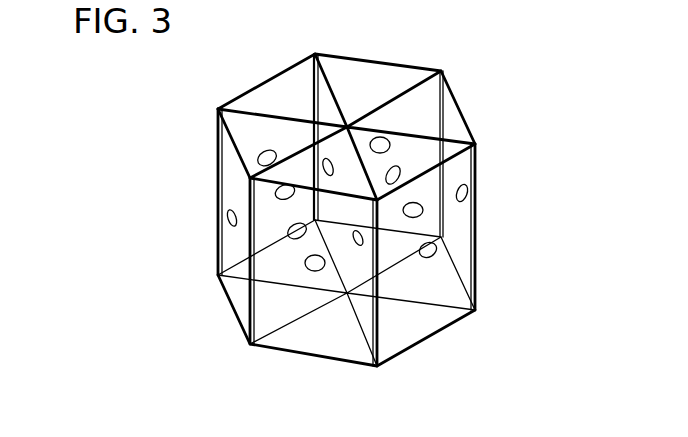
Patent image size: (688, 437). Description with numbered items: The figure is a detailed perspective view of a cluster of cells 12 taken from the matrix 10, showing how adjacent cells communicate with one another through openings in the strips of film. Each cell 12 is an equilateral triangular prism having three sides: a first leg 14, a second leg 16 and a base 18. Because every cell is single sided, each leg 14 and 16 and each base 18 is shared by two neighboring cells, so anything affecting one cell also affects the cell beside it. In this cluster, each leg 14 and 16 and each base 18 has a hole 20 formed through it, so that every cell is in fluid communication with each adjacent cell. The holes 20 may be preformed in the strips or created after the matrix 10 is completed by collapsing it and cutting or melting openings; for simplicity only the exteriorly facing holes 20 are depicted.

The matrix 10 is at (488, 112).
The cell 12 is at (382, 77).
The leg 14 is at (428, 98).
The leg 16 is at (308, 80).
The base 18 is at (354, 78).
The hole 20 is at (228, 222).